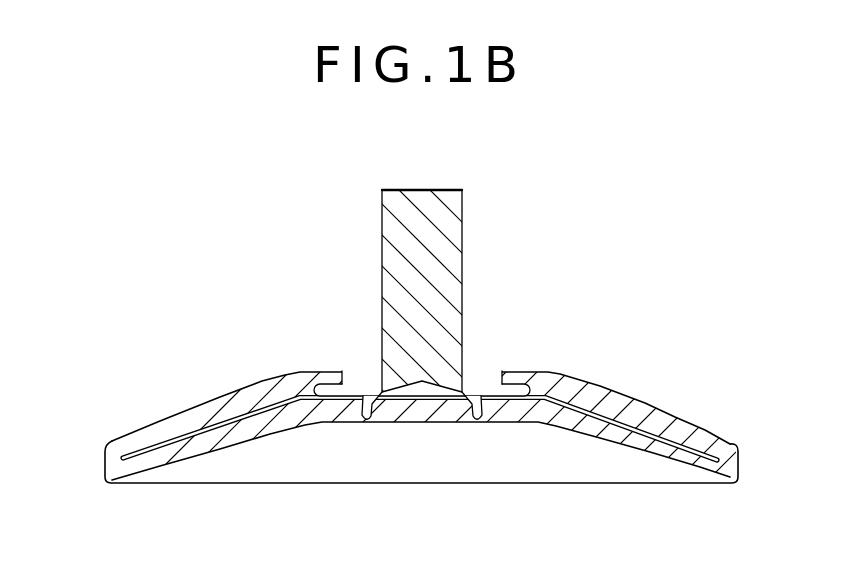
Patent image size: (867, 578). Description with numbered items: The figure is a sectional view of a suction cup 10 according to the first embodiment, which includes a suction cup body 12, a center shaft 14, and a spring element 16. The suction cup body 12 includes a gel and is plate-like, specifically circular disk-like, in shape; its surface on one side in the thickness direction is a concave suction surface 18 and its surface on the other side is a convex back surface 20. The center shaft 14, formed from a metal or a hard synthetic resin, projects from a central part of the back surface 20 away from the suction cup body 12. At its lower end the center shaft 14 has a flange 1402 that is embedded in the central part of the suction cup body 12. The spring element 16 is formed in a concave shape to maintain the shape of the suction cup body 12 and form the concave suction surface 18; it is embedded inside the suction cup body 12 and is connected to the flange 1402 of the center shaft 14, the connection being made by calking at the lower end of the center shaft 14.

The suction cup 10 is at (154, 295).
The suction cup body 12 is at (688, 422).
The center shaft 14 is at (464, 228).
The flange 1402 is at (513, 383).
The spring element 16 is at (565, 398).
The suction surface 18 is at (237, 445).
The back surface 20 is at (200, 405).